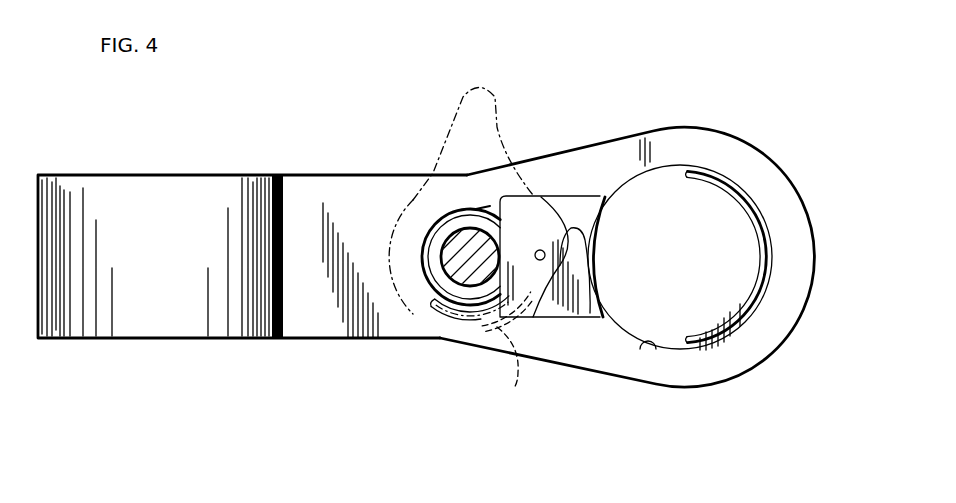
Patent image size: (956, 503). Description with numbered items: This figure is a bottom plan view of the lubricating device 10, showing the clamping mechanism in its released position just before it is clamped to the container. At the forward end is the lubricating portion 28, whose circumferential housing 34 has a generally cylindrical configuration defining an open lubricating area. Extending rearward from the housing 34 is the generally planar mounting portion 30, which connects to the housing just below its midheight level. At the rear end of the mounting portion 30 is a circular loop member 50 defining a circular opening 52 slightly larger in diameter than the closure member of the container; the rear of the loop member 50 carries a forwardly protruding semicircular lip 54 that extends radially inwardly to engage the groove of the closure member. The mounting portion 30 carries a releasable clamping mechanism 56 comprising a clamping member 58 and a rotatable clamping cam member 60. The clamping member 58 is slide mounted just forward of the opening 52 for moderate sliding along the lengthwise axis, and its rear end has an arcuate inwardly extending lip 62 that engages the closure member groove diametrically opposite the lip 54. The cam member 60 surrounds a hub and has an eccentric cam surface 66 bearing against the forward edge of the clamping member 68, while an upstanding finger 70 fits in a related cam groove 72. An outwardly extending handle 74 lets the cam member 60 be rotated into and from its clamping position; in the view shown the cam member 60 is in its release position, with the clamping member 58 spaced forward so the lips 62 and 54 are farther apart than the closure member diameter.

The device 10 is at (688, 86).
The lubricating portion 28 is at (180, 148).
The mounting portion 30 is at (736, 124).
The circumferential housing 34 is at (163, 182).
The circular loop member 50 is at (767, 168).
The circular opening 52 is at (641, 339).
The semicircular lip 54 is at (760, 233).
The releasable clamping mechanism 56 is at (429, 163).
The clamping member 58 is at (570, 200).
The rotatable clamping cam member 60 is at (432, 322).
The arcuate inwardly extending lip 62 is at (590, 282).
The eccentric cam surface 66 is at (472, 228).
The clamping member 68 is at (440, 290).
The upstanding finger 70 is at (592, 244).
The cam groove 72 is at (518, 375).
The handle 74 is at (498, 110).